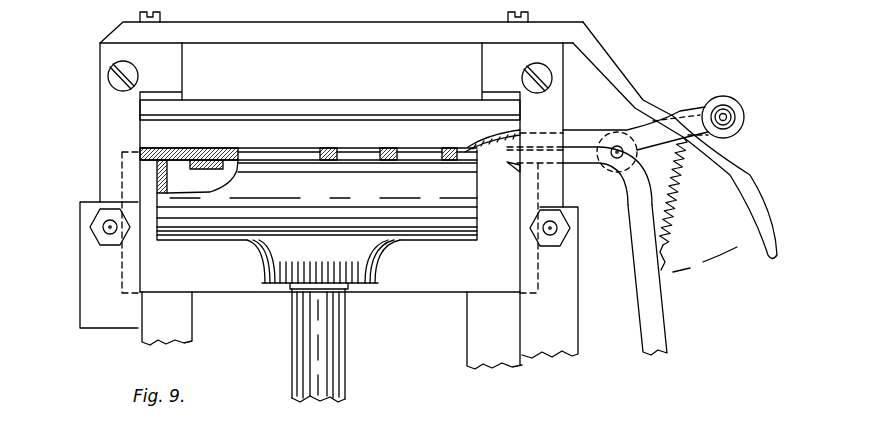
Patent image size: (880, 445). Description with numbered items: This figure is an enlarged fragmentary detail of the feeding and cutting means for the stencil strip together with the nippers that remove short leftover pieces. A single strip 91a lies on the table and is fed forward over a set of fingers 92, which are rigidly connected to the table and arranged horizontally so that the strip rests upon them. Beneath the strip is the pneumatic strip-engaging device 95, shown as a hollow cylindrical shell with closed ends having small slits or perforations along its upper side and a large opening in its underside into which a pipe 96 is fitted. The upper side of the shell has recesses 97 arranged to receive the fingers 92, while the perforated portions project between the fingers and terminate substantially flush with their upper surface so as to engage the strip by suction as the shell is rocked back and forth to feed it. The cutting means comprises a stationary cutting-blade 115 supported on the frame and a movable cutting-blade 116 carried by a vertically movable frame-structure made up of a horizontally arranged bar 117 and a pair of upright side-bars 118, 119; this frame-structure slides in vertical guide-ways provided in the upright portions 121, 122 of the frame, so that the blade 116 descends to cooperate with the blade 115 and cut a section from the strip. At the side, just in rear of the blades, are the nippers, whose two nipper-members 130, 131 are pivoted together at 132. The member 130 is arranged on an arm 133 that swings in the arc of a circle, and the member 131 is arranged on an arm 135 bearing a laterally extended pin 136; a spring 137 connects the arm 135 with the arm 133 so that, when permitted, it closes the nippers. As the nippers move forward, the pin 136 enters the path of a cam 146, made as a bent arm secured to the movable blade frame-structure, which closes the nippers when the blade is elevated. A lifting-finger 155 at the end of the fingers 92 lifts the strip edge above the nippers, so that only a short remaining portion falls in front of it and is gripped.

The horizontally arranged bar 117 is at (272, 55).
The upright side-bar 119 is at (110, 104).
The upright side-bar 118 is at (556, 98).
The cutting-blade 116 is at (303, 118).
The strip 91a is at (287, 148).
The recesses 97 is at (222, 154).
The fingers 92 is at (385, 152).
The lifting-finger 155 is at (476, 148).
The pneumatic strip-engaging device 95 is at (467, 209).
The pipe 96 is at (322, 365).
The cutting-blade 115 is at (444, 279).
The upright portion 121 is at (568, 333).
The upright portion 122 is at (88, 312).
The nipper-member 130 is at (580, 132).
The arm 135 is at (663, 142).
The pivot 132 is at (617, 146).
The nipper-member 131 is at (580, 166).
The arm 133 is at (654, 301).
The pin 136 is at (729, 112).
The cam 146 is at (741, 169).
The spring 137 is at (677, 223).